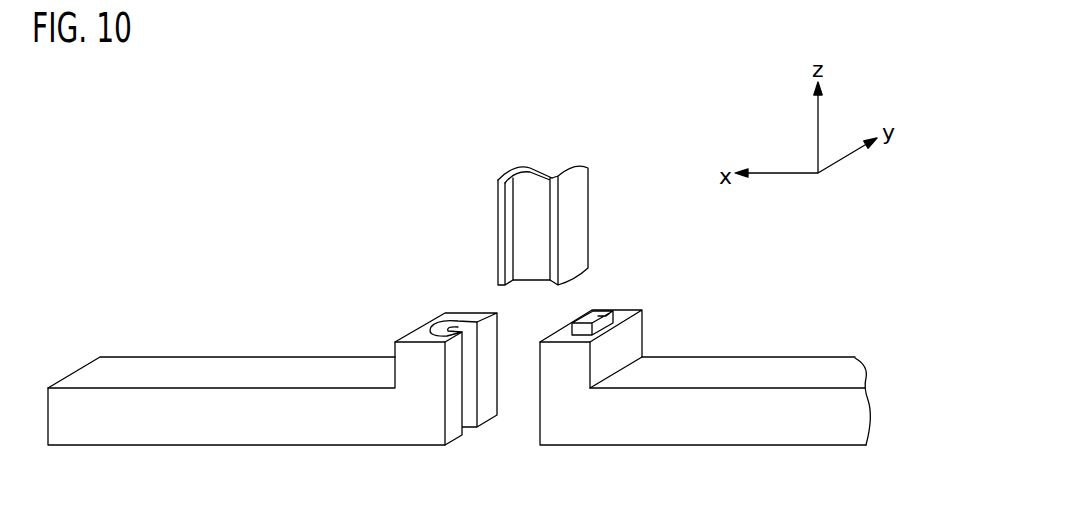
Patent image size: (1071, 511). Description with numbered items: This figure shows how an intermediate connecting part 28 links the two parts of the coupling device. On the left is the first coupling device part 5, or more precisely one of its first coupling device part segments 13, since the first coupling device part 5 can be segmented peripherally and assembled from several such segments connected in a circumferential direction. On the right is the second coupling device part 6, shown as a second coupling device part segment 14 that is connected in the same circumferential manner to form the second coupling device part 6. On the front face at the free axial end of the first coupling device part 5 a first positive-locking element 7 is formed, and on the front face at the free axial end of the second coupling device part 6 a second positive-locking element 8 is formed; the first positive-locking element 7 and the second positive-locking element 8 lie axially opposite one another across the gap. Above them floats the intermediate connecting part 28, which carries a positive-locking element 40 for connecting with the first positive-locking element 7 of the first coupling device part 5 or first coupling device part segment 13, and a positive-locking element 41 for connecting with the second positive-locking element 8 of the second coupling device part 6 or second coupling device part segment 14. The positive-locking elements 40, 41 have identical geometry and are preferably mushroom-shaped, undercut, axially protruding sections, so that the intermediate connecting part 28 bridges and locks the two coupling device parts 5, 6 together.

The first coupling device part 5 is at (272, 331).
The first coupling device part segment 13 is at (162, 352).
The first positive-locking element 7 is at (438, 312).
The second coupling device part 6 is at (705, 334).
The second coupling device part segment 14 is at (713, 328).
The second positive-locking element 8 is at (603, 300).
The intermediate connecting part 28 is at (558, 183).
The positive-locking element 40 is at (502, 168).
The positive-locking element 41 is at (577, 189).